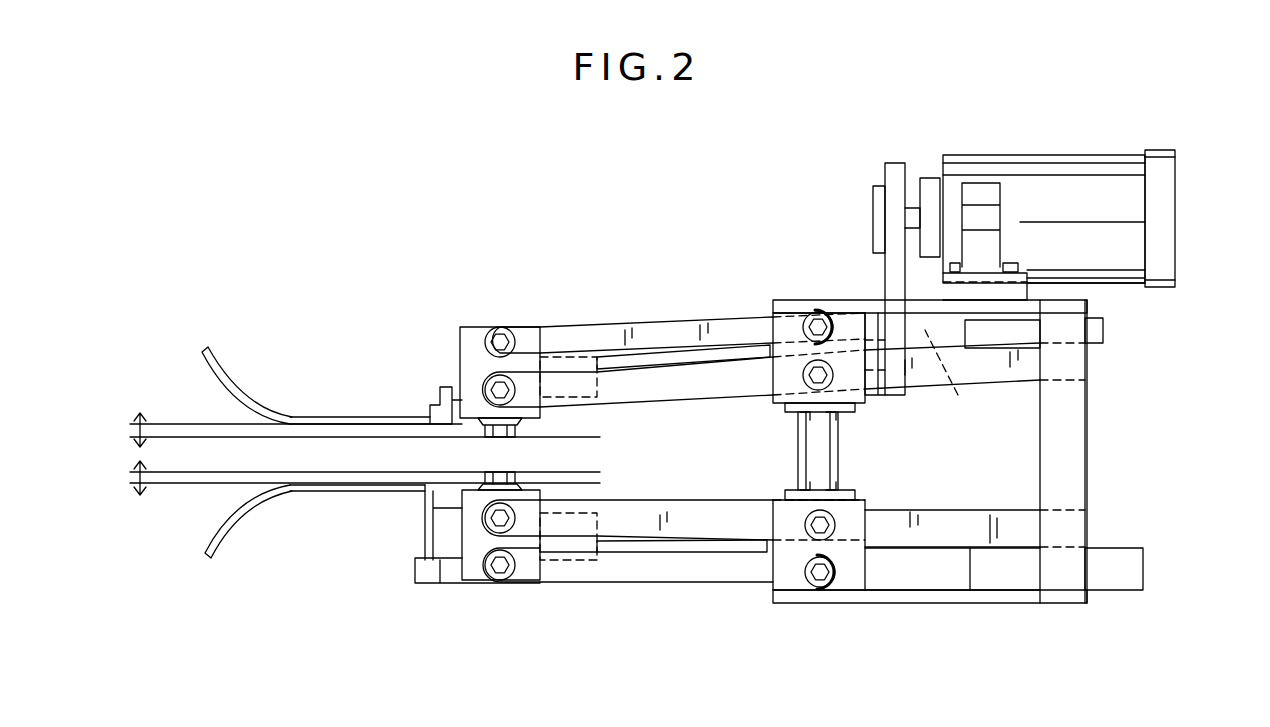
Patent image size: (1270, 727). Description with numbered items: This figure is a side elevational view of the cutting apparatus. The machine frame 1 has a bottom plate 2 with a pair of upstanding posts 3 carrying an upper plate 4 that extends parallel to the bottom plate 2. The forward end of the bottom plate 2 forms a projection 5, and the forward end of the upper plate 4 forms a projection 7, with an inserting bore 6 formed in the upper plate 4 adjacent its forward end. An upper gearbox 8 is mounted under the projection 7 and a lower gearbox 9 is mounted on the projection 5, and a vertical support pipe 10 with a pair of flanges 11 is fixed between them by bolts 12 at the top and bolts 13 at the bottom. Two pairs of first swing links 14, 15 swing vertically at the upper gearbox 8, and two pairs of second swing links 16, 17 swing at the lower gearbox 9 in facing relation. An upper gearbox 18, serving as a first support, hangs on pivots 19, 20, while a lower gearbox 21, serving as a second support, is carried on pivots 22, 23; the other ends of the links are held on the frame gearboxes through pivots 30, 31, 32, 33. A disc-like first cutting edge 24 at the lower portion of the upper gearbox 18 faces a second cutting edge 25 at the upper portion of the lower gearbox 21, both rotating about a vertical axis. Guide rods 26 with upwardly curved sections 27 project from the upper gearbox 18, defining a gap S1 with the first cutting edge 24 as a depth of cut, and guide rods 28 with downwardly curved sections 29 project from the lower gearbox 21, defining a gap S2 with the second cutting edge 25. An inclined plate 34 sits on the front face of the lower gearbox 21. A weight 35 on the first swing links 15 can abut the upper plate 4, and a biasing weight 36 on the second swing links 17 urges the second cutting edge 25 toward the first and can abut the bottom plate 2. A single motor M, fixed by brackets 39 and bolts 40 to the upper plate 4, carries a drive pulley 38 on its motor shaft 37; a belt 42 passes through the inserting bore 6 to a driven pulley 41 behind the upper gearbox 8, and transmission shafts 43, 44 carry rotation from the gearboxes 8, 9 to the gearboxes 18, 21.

The machine frame 1 is at (1143, 480).
The bottom plate 2 is at (955, 601).
The posts 3 is at (1070, 428).
The upper plate 4 is at (1087, 328).
The projection 5 is at (791, 597).
The inserting bore 6 is at (877, 313).
The projection 7 is at (777, 314).
The upper gearbox 8 is at (843, 310).
The lower gearbox 9 is at (868, 562).
The support pipe 10 is at (840, 455).
The flanges 11 is at (856, 407).
The bolts 12 is at (830, 418).
The bolts 13 is at (830, 486).
The first swing links 14 is at (578, 330).
The first swing links 15 is at (707, 378).
The second swing links 16 is at (592, 568).
The second swing links 17 is at (706, 560).
The upper gearbox 18 is at (463, 352).
The pivots 19 is at (497, 336).
The pivots 20 is at (507, 383).
The lower gearbox 21 is at (478, 574).
The pivots 22 is at (501, 572).
The pivots 23 is at (511, 522).
The first cutting edge 24 is at (406, 434).
The second cutting edge 25 is at (424, 498).
The guide rods 26 is at (298, 416).
The curved sections 27 is at (224, 382).
The guide rods 28 is at (322, 492).
The curved sections 29 is at (238, 516).
The pivots 30 is at (809, 326).
The pivots 31 is at (812, 372).
The pivots 32 is at (818, 578).
The pivots 33 is at (829, 532).
The inclined plate 34 is at (458, 568).
The weight 35 is at (1098, 331).
The weight 36 is at (1118, 550).
The motor shaft 37 is at (912, 208).
The drive pulley 38 is at (890, 168).
The brackets 39 is at (1030, 284).
The bolts 40 is at (1010, 262).
The driven pulley 41 is at (956, 392).
The belt 42 is at (880, 207).
The transmission shaft 43 is at (662, 355).
The transmission shaft 44 is at (662, 548).
The gap S1 is at (345, 426).
The gap S2 is at (345, 473).
The motor M is at (1082, 156).